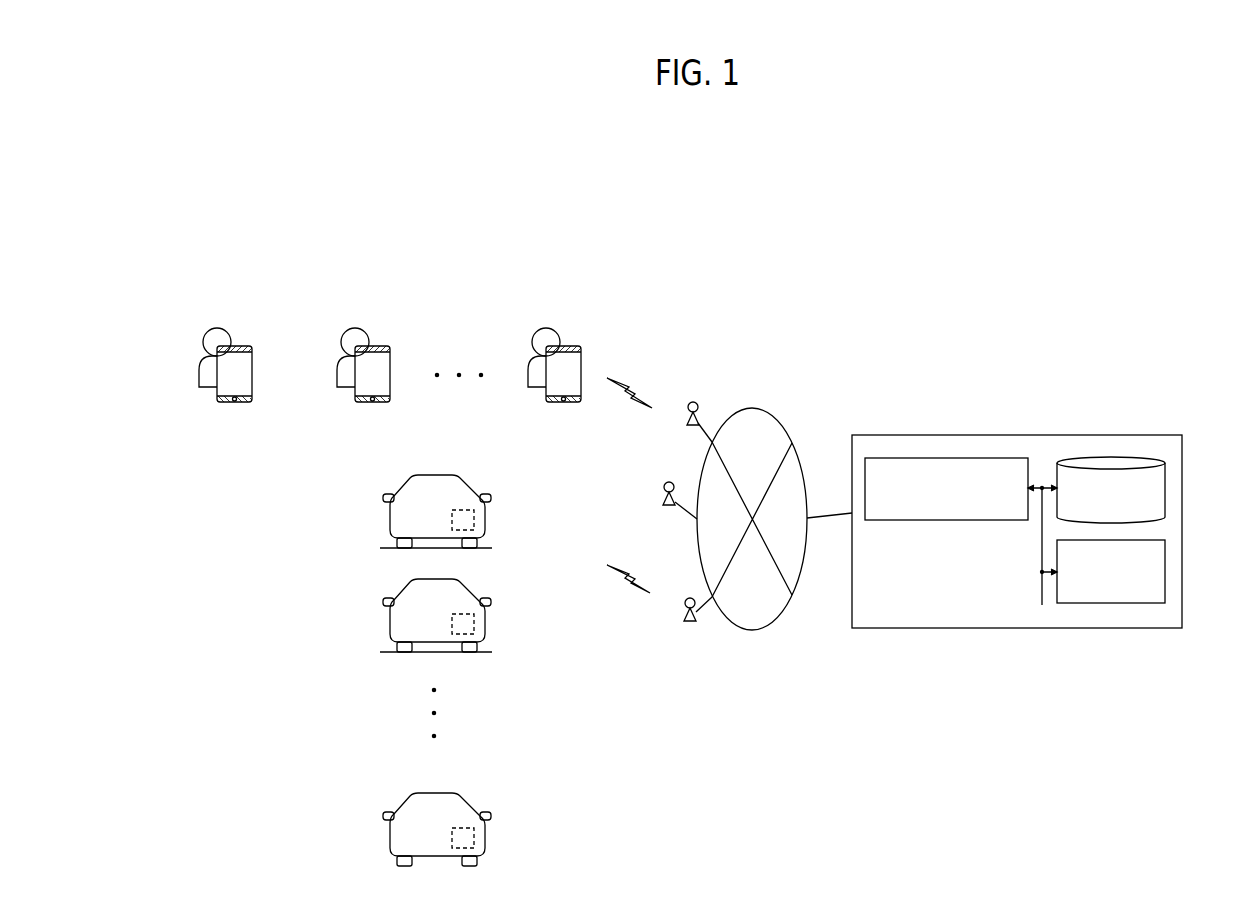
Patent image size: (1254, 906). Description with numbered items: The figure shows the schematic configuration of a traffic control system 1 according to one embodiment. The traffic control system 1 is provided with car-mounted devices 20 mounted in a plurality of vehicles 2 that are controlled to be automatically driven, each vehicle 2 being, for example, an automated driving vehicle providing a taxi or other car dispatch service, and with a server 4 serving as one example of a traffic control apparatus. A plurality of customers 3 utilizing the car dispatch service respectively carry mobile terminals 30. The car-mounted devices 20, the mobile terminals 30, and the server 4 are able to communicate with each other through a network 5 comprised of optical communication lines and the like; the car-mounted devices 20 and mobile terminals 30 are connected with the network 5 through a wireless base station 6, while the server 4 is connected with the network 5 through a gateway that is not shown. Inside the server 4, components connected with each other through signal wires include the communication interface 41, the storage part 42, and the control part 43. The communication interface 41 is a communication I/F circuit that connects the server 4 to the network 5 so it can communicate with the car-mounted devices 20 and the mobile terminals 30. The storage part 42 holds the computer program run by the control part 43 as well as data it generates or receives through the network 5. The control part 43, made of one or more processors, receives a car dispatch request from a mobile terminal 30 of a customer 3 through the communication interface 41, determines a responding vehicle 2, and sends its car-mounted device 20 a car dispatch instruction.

The traffic control system 1 is at (854, 347).
The vehicle 2 is at (455, 477).
The car-mounted device 20 is at (476, 519).
The customer 3 is at (213, 330).
The mobile terminal 30 is at (242, 346).
The server 4 is at (878, 435).
The communication interface 41 is at (945, 520).
The storage part 42 is at (1107, 457).
The control part 43 is at (1112, 603).
The network 5 is at (752, 408).
The wireless base station 6 is at (692, 401).